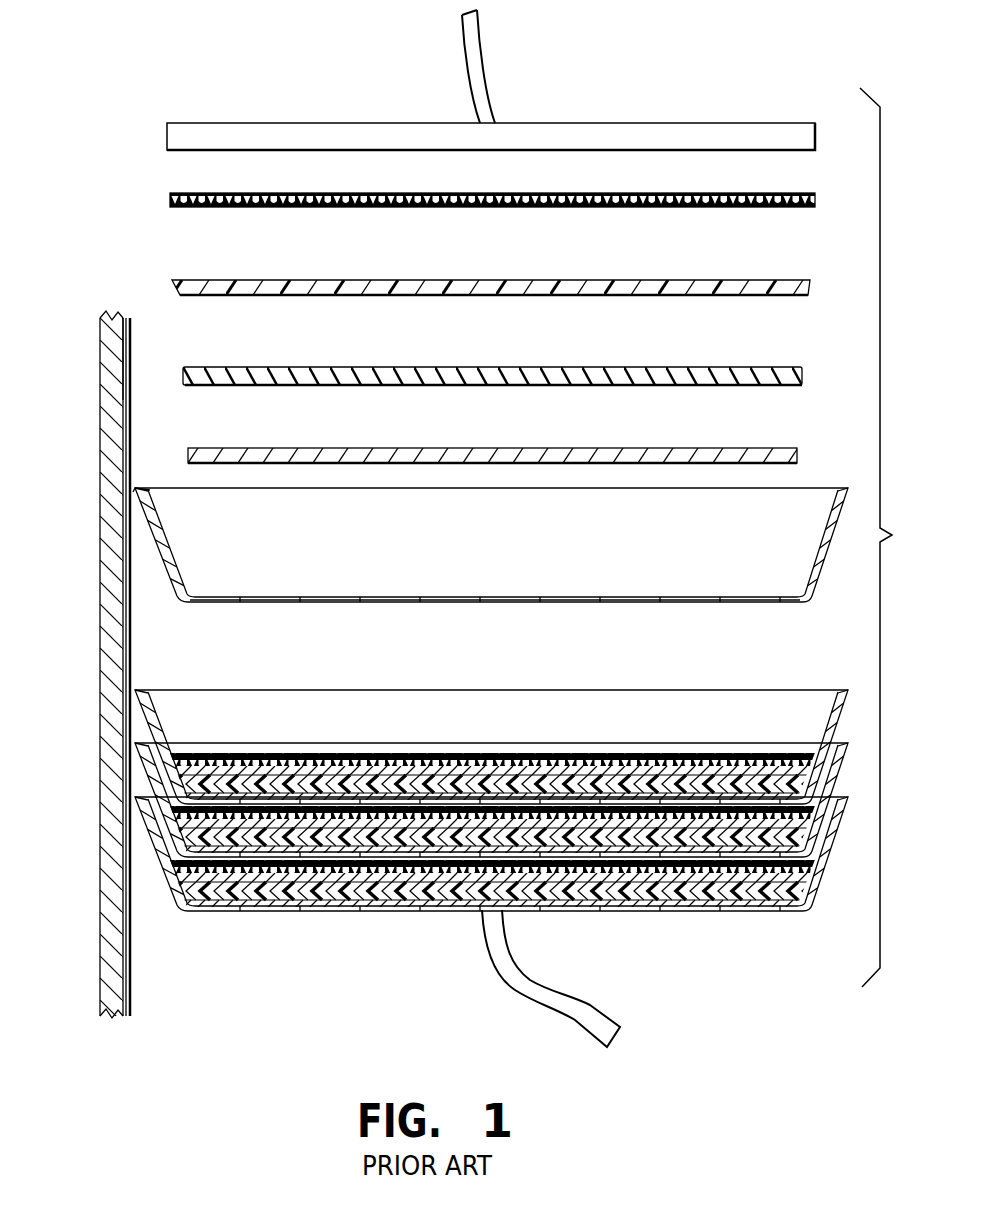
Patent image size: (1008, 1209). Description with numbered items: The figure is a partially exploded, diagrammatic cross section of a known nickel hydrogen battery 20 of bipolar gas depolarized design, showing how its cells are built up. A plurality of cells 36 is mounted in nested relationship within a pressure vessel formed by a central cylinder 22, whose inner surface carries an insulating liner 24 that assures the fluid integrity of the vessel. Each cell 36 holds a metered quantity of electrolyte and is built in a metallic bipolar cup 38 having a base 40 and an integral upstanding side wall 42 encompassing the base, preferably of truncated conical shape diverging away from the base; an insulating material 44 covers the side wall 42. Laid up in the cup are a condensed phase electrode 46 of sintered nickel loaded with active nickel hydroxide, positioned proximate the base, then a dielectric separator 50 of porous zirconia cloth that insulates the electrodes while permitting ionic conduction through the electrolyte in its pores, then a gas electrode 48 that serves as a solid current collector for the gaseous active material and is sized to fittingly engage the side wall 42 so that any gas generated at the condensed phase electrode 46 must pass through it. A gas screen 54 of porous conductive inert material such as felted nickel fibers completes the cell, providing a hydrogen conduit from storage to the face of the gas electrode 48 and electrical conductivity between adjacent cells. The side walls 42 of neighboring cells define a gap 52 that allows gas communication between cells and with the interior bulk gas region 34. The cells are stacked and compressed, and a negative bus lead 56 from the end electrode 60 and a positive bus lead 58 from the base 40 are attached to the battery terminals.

The nickel hydrogen battery 20 is at (896, 537).
The central cylinder 22 is at (112, 608).
The insulating liner 24 is at (128, 603).
The interior bulk gas region 34 is at (153, 378).
The cell 36 is at (449, 236).
The metallic bipolar cup 38 is at (490, 699).
The base 40 is at (323, 597).
The upstanding side wall 42 is at (165, 538).
The insulating material 44 is at (150, 487).
The condensed phase electrode 46 is at (622, 448).
The gas electrode 48 is at (575, 281).
The dielectric separator 50 is at (482, 385).
The gap 52 is at (137, 688).
The gas screen 54 is at (405, 208).
The negative bus lead 56 is at (485, 63).
The positive bus lead 58 is at (587, 1008).
The electrode 60 is at (668, 132).